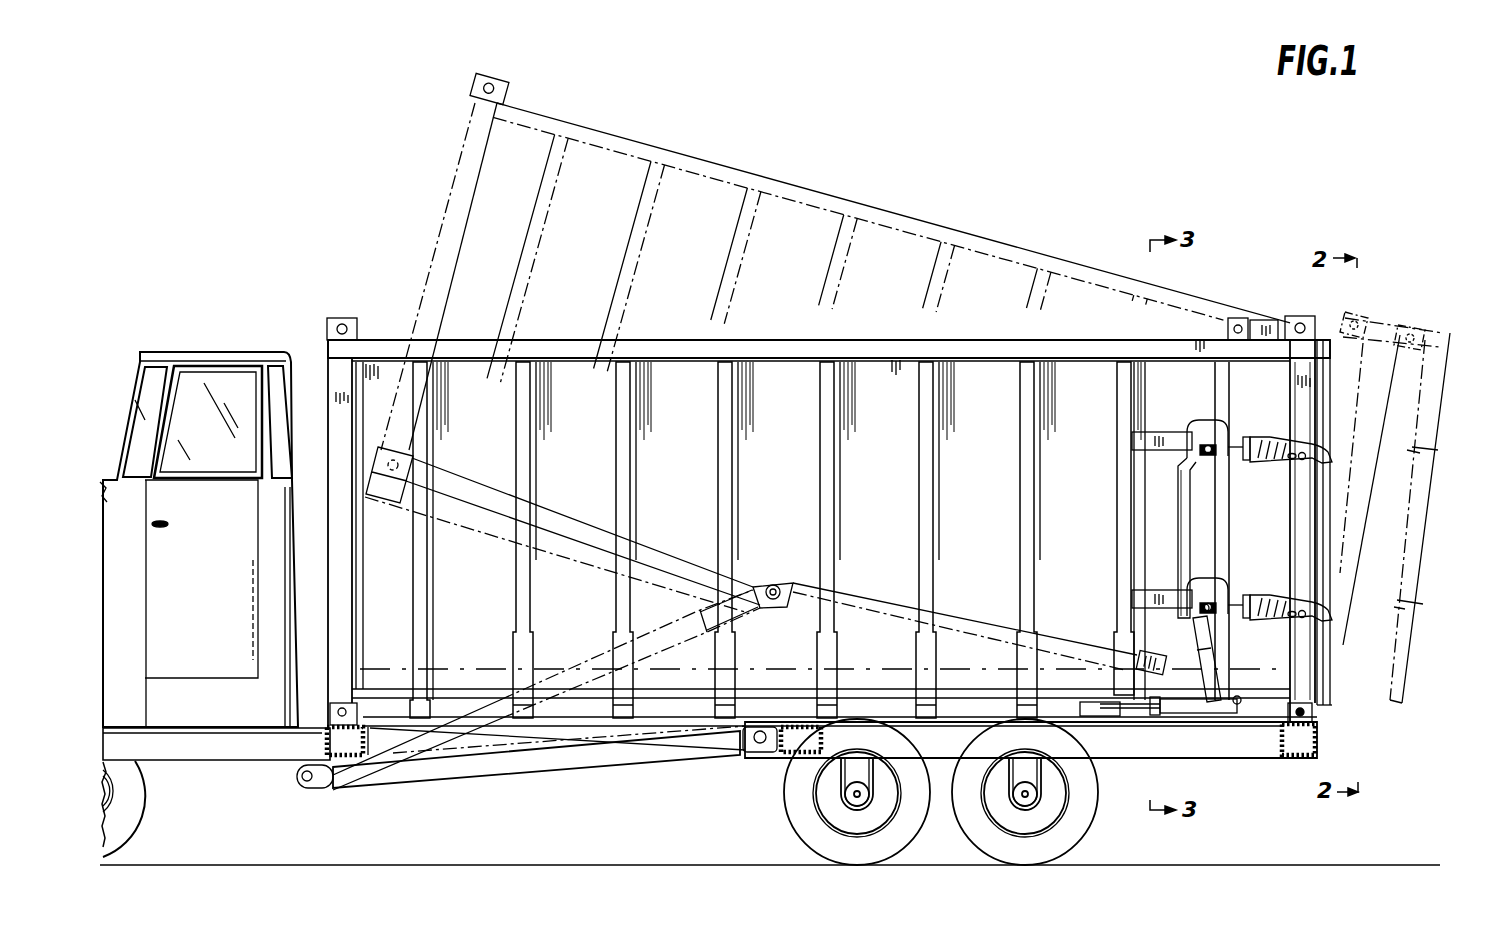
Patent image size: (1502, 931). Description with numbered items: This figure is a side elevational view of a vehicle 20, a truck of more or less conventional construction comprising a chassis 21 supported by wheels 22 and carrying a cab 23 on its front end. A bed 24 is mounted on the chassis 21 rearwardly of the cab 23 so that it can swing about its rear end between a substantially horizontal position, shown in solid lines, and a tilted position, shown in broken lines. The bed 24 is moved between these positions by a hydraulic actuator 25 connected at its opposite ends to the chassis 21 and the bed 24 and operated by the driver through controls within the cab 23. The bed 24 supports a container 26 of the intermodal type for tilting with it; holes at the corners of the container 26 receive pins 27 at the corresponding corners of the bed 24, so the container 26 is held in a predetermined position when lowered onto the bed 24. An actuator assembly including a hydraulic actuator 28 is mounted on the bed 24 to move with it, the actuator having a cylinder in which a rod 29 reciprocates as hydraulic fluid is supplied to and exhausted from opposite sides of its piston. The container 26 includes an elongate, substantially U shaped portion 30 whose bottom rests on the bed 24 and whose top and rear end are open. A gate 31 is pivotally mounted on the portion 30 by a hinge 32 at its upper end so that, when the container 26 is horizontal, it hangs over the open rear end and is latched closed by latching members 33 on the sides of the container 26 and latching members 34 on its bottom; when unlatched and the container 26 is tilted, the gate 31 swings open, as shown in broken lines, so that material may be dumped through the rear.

The vehicle 20 is at (648, 767).
The chassis 21 is at (230, 762).
The wheels 22 is at (1093, 833).
The cab 23 is at (204, 352).
The bed 24 is at (1230, 762).
The hydraulic actuator 25 is at (543, 770).
The container 26 is at (920, 218).
The pins 27 is at (1307, 712).
The hydraulic actuator 28 is at (1100, 652).
The rod 29 is at (1155, 717).
The U shaped portion 30 is at (653, 338).
The gate 31 is at (1330, 515).
The hinge 32 is at (1237, 318).
The latching members 33 is at (1270, 467).
The latching members 34 is at (1332, 712).